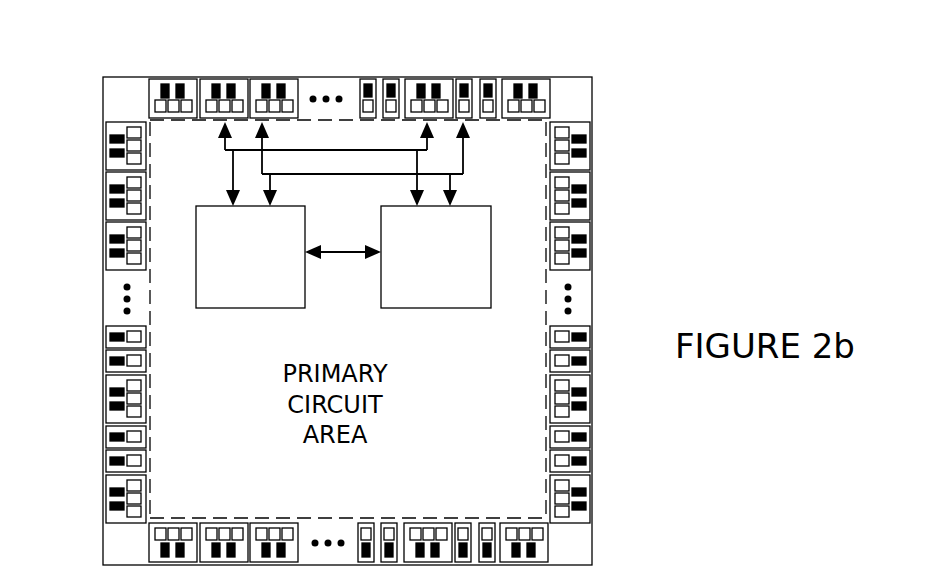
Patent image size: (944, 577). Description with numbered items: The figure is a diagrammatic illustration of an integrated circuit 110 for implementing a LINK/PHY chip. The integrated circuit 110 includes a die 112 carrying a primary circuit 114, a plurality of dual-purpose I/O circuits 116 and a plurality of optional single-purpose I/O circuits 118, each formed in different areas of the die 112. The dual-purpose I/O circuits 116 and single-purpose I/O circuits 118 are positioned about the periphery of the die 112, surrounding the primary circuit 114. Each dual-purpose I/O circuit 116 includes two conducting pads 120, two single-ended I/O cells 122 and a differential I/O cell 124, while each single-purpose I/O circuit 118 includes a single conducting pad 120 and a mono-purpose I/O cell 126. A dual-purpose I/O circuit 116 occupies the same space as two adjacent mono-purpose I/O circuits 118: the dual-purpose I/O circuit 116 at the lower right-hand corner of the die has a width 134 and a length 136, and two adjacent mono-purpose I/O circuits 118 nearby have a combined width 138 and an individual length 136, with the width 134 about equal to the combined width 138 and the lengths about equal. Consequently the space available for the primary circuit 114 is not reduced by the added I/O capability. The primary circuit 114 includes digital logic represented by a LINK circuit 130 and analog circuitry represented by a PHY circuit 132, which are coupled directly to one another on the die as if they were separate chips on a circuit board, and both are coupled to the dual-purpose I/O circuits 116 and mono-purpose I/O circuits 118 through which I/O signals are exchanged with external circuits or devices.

The integrated circuit 110 is at (80, 34).
The die 112 is at (103, 170).
The primary circuit 114 is at (505, 317).
The dual-purpose I/O circuit 116 is at (192, 86).
The single-purpose I/O circuit 118 is at (365, 88).
The conducting pad 120 is at (230, 88).
The single-ended I/O cell 122 is at (289, 97).
The differential I/O cell 124 is at (428, 99).
The mono-purpose I/O cell 126 is at (370, 97).
The LINK circuit 130 is at (250, 298).
The PHY circuit 132 is at (457, 298).
The width 134 is at (601, 476).
The length 136 is at (588, 525).
The combined width 138 is at (601, 427).